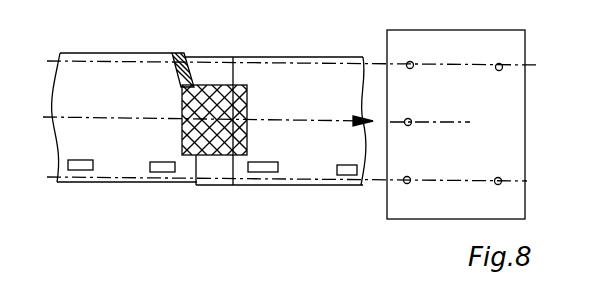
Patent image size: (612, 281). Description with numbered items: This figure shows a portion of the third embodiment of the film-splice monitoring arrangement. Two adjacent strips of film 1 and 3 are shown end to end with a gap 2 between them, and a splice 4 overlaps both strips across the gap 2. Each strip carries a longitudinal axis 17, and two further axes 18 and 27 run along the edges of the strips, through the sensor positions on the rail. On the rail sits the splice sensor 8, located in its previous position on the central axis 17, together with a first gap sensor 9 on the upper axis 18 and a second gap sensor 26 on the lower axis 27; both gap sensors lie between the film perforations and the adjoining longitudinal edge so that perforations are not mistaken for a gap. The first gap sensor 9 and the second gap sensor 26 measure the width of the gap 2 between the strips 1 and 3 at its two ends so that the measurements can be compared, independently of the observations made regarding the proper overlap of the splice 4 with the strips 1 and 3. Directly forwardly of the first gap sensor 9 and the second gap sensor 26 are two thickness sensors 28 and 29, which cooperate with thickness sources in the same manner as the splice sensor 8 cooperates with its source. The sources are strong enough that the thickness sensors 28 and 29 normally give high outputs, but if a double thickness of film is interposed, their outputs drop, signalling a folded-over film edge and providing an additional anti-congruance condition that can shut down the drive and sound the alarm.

The strip of film 1 is at (299, 103).
The gap 2 is at (220, 56).
The strip of film 3 is at (108, 53).
The splice 4 is at (248, 108).
The splice sensor 8 is at (406, 118).
The first gap sensor 9 is at (404, 65).
The central axis 17 is at (132, 118).
The upper axis 18 is at (297, 63).
The second gap sensor 26 is at (408, 185).
The lower axis 27 is at (307, 177).
The thickness sensor 28 is at (496, 64).
The thickness sensor 29 is at (497, 185).